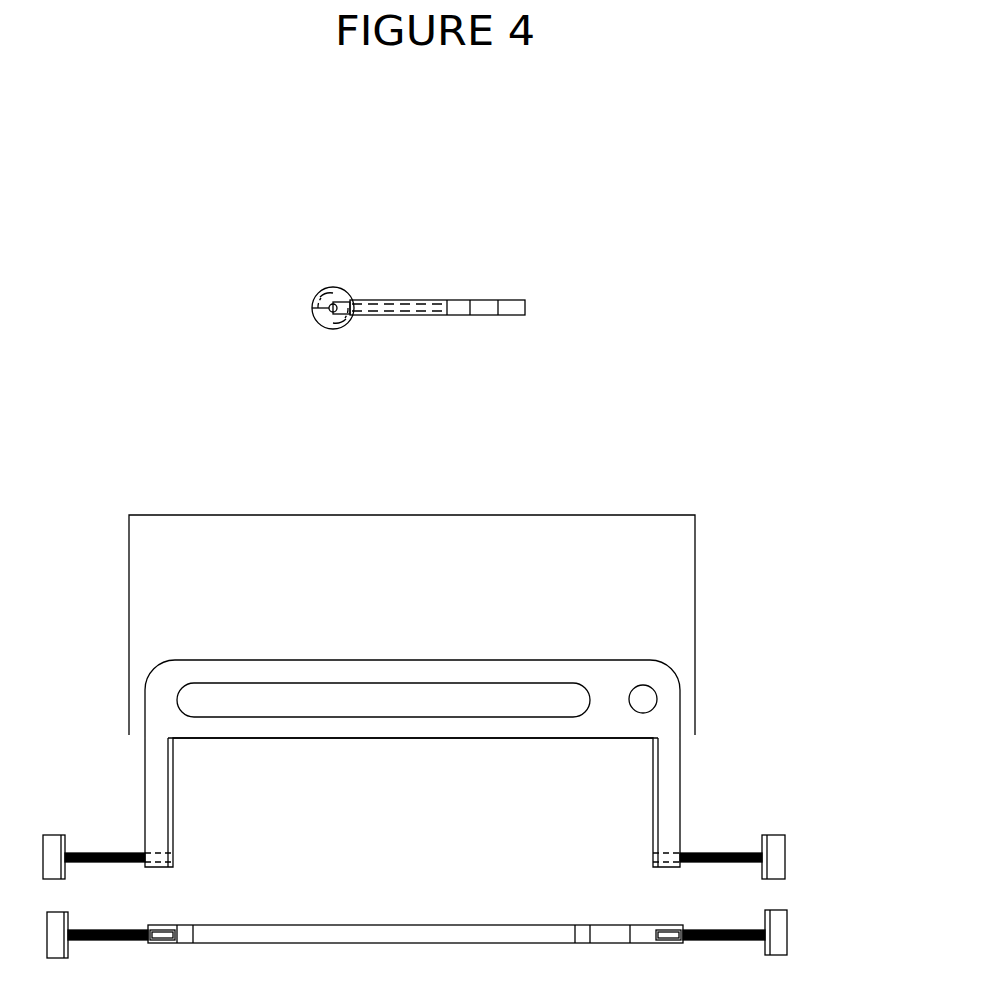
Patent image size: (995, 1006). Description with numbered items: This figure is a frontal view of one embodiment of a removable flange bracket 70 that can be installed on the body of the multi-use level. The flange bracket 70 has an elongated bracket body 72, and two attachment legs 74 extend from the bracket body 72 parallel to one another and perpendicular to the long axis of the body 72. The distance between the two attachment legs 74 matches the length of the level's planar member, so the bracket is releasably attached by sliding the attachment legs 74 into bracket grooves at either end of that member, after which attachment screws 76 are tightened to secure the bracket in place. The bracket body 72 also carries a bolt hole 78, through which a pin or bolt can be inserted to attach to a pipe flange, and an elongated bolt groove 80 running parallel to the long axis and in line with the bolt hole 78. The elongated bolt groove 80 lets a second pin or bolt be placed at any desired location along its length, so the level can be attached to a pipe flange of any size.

The flange bracket 70 is at (412, 480).
The elongated bracket body 72 is at (417, 675).
The attachment legs 74 is at (417, 300).
The attachment screws 76 is at (333, 329).
The bolt hole 78 is at (643, 700).
The elongated bolt groove 80 is at (416, 705).